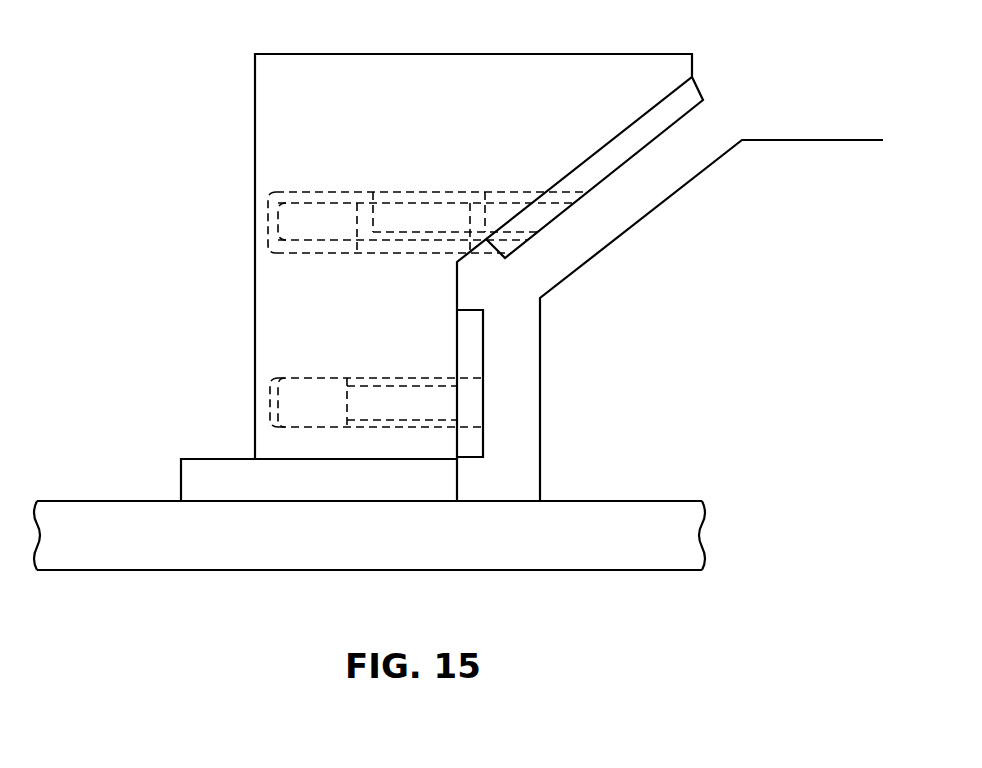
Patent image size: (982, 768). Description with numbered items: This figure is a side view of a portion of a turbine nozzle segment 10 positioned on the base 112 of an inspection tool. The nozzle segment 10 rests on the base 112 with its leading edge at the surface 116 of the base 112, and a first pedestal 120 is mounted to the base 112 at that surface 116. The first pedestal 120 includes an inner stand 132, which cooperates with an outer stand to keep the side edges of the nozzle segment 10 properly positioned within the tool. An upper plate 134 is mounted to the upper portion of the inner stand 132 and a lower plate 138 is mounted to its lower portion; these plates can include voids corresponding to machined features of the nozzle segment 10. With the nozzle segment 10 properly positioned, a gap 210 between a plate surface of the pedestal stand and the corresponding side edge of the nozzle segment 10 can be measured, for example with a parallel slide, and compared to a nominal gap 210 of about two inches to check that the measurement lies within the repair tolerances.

The nozzle segment 10 is at (840, 153).
The base 112 is at (137, 513).
The surface 116 is at (580, 501).
The first pedestal 120 is at (213, 459).
The inner stand 132 is at (408, 63).
The upper plate 134 is at (688, 94).
The lower plate 138 is at (473, 357).
The gap 210 is at (718, 138).